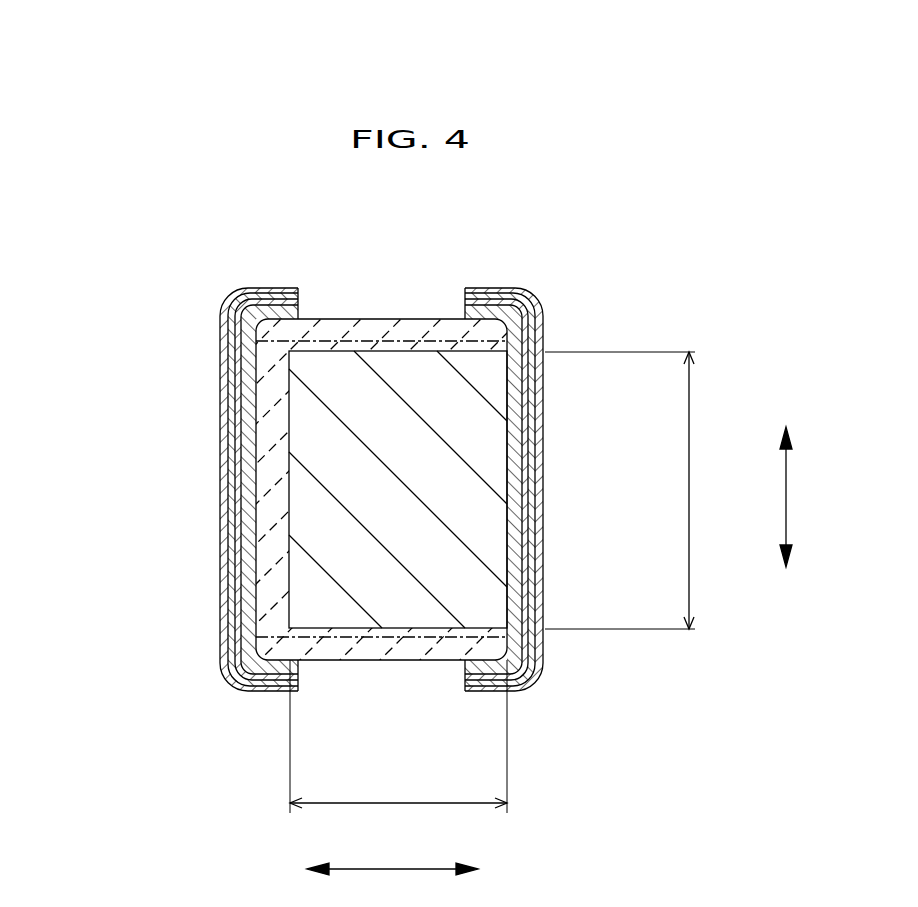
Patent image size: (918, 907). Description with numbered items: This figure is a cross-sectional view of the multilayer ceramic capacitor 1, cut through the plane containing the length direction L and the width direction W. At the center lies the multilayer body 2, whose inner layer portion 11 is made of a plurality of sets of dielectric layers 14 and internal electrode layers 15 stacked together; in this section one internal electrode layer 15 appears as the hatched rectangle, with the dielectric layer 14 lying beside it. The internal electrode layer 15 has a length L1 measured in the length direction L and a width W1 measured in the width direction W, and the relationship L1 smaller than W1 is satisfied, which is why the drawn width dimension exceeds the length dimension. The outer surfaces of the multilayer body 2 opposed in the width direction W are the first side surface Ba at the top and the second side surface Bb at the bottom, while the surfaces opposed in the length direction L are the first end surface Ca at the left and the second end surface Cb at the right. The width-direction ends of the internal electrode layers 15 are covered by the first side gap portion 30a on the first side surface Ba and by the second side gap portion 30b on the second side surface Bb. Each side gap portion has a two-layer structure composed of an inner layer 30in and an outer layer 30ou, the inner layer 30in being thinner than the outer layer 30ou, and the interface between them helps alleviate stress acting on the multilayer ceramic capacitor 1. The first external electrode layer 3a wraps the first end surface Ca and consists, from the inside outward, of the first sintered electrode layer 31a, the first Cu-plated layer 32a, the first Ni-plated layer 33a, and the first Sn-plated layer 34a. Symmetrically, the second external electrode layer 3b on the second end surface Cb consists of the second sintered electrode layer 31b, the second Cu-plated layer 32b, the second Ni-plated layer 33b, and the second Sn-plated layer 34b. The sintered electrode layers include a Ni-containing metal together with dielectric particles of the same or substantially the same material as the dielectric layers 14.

The multilayer ceramic capacitor 1 is at (615, 110).
The multilayer body 2 is at (321, 305).
The first external electrode layer 3a is at (165, 466).
The second external electrode layer 3b is at (600, 454).
The inner layer portion 11 is at (222, 748).
The dielectric layer 14 is at (270, 595).
The internal electrode layer 15 is at (317, 593).
The first side gap portion 30a is at (372, 330).
The second side gap portion 30b is at (435, 665).
The inner layer 30in is at (403, 343).
The outer layer 30ou is at (450, 332).
The first sintered electrode layer 31a is at (243, 305).
The first Cu-plated layer 32a is at (238, 322).
The first Ni-plated layer 33a is at (231, 345).
The first Sn-plated layer 34a is at (207, 490).
The second sintered electrode layer 31b is at (513, 313).
The second Cu-plated layer 32b is at (526, 301).
The second Ni-plated layer 33b is at (533, 318).
The second Sn-plated layer 34b is at (558, 490).
The first side surface Ba is at (343, 318).
The second side surface Bb is at (355, 665).
The first end surface Ca is at (221, 500).
The second end surface Cb is at (545, 500).
The width of the internal electrode layer W1 is at (641, 490).
The width direction W is at (798, 497).
The length of the internal electrode layer L1 is at (398, 749).
The length direction L is at (392, 883).